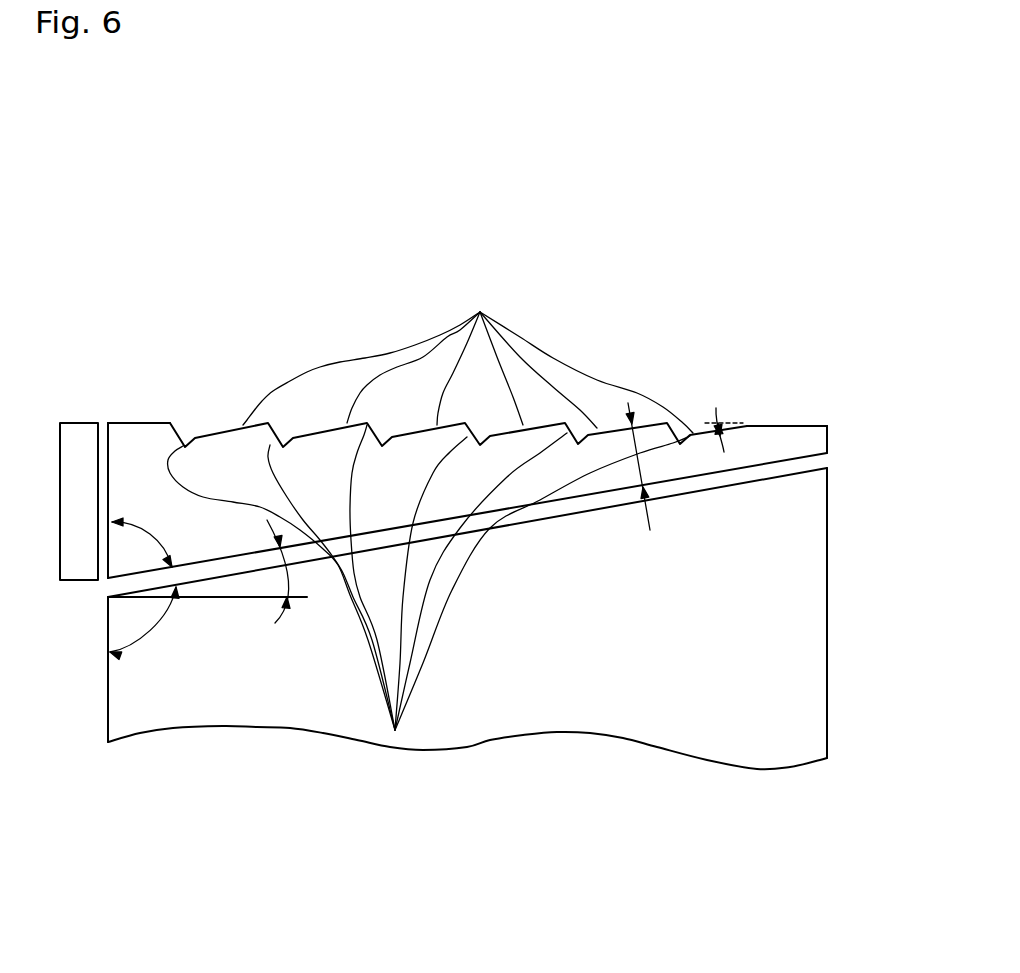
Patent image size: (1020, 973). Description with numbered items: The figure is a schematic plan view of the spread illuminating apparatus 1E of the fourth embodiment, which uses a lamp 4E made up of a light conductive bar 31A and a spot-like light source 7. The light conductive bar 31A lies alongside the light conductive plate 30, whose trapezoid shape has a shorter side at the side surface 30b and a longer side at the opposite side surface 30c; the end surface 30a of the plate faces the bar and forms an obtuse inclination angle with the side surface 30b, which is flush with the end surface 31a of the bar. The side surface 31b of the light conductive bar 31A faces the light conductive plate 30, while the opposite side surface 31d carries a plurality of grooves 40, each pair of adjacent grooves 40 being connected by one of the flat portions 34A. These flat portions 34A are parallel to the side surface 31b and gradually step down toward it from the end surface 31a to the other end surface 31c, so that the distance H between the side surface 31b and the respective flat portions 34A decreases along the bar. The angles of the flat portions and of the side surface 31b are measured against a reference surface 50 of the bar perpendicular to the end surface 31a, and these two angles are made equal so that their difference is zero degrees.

The spread illuminating apparatus 1E is at (698, 332).
The lamp 4E is at (53, 423).
The spot-like light source 7 is at (80, 520).
The light conductive plate 30 is at (466, 666).
The end surface 30a is at (607, 507).
The side surface 30b is at (108, 683).
The side surface 30c is at (831, 553).
The light conductive bar 31A is at (208, 418).
The end surface 31a is at (106, 552).
The side surface 31b is at (533, 507).
The end surface 31c is at (831, 438).
The side surface 31d is at (135, 424).
The flat portions 34A is at (468, 350).
The grooves 40 is at (395, 730).
The reference surface 50 is at (245, 598).
The distance H is at (649, 471).